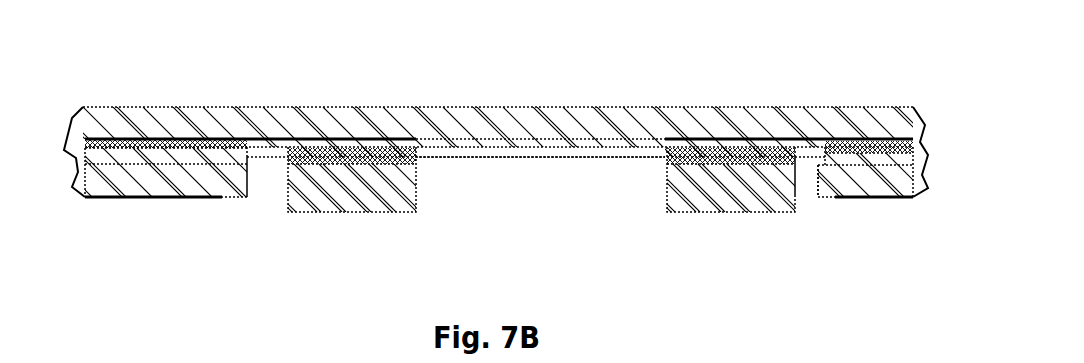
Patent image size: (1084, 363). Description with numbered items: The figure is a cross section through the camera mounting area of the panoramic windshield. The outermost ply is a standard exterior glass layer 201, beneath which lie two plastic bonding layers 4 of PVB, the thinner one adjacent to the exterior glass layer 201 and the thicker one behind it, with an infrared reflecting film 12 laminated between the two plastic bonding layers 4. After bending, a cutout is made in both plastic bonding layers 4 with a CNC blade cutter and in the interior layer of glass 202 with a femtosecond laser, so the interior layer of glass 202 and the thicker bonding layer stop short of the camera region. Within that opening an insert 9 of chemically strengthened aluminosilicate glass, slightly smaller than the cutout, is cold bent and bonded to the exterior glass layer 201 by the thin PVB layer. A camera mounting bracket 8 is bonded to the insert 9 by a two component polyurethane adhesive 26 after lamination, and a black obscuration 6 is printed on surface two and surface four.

The exterior glass layer 201 is at (733, 104).
The infrared reflecting film 12 is at (105, 140).
The plastic bonding layer 4 is at (513, 135).
The insert 9 is at (523, 164).
The black obscuration 6 is at (177, 134).
The two component poly urethane adhesive 26 is at (422, 163).
The camera mounting bracket 8 is at (292, 217).
The interior layer of glass 202 is at (237, 202).